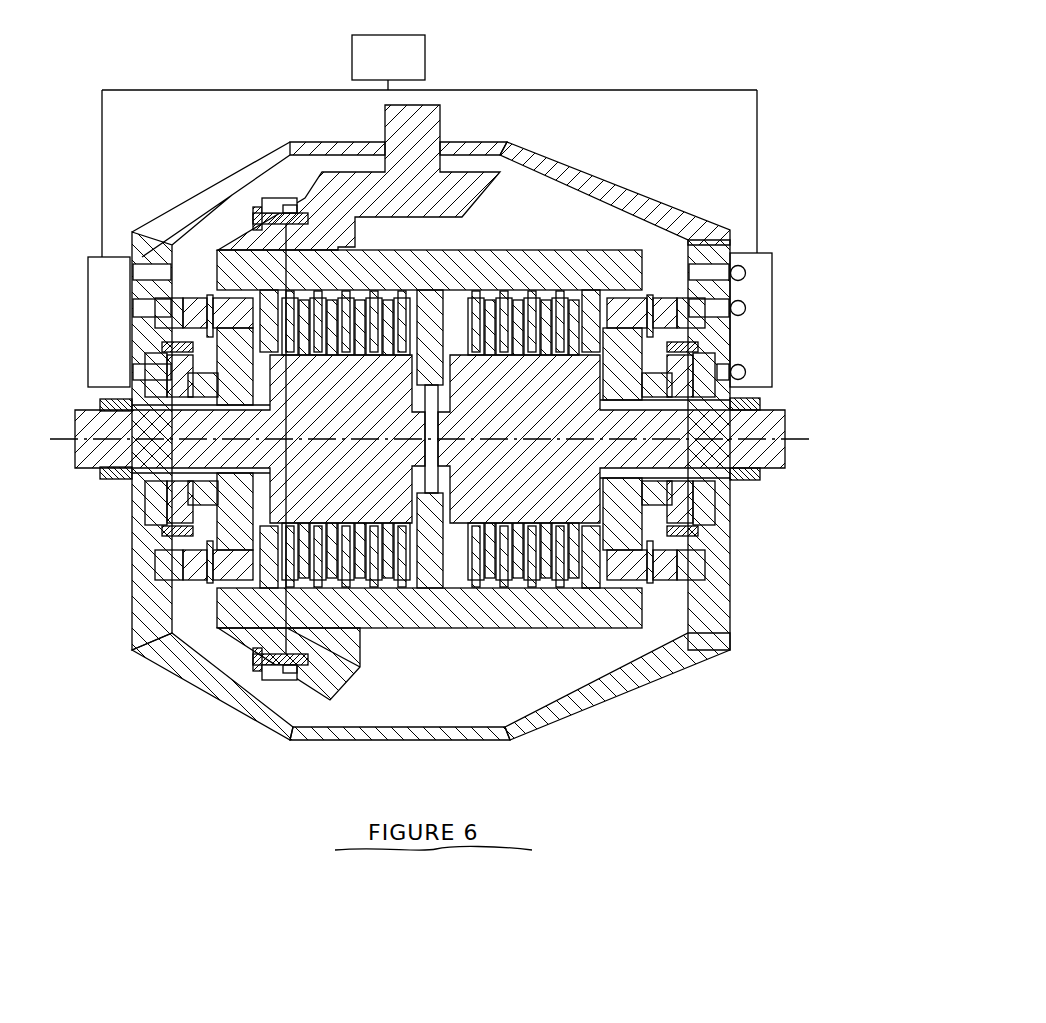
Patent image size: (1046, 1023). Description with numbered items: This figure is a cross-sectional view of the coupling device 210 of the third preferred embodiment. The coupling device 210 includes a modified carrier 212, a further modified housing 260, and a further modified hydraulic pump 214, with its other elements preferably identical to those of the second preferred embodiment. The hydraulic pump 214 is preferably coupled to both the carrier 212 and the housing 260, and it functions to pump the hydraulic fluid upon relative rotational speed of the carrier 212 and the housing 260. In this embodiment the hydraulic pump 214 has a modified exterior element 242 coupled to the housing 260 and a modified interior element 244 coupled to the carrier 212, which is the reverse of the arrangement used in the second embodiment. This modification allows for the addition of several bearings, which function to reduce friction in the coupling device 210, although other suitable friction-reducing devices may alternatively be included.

The coupling device 210 is at (453, 378).
The carrier 212 is at (178, 270).
The hydraulic pump 214 is at (717, 522).
The exterior element 242 is at (703, 345).
The interior element 244 is at (712, 410).
The housing 260 is at (683, 650).